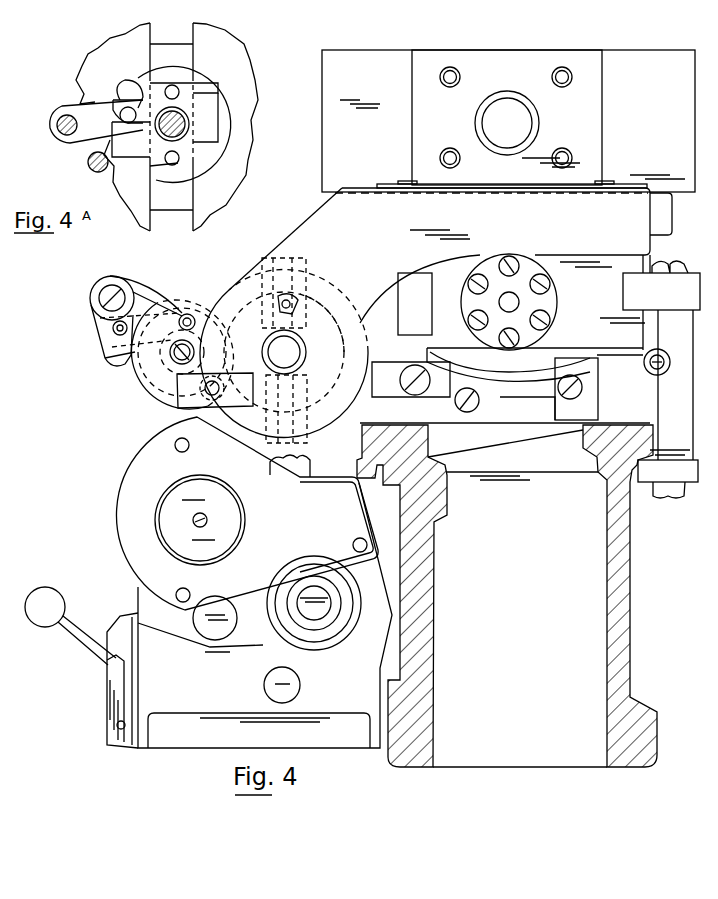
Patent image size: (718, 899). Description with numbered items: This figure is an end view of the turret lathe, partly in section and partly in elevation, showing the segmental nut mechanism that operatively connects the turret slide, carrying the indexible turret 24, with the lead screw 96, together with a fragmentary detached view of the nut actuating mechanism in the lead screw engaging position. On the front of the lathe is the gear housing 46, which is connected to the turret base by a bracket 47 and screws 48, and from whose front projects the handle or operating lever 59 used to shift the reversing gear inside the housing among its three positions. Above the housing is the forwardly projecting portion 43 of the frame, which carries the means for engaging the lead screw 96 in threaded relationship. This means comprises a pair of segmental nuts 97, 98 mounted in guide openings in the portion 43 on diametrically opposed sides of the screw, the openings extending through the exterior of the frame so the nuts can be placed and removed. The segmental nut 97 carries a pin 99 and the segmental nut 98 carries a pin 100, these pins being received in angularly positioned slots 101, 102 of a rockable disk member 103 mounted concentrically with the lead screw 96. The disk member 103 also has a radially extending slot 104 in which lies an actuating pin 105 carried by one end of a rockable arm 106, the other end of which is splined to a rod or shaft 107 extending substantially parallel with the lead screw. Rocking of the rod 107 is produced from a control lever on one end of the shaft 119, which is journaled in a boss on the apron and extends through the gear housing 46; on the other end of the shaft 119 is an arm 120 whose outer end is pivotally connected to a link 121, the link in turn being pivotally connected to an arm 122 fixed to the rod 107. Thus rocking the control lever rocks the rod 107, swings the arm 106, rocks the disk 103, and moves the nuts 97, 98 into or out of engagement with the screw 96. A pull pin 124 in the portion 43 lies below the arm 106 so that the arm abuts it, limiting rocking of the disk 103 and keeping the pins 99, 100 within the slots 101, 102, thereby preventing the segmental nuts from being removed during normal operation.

In FIG. 4, the indexible turret 24 is at (636, 60).
In FIG. 4, the forwardly projecting portion of frame 43 is at (330, 220).
In FIG. 4, the gear housing 46 is at (145, 527).
In FIG. 4, the bracket 47 is at (578, 360).
In FIG. 4, the screws 48 is at (462, 412).
In FIG. 4, the handle or operating lever 59 is at (100, 663).
In FIG. 4A, the lead screw 96 is at (190, 124).
In FIG. 4, the lead screw 96 is at (300, 352).
In FIG. 4A, the segmental nut 97 is at (172, 50).
In FIG. 4, the segmental nut 97 is at (306, 280).
In FIG. 4A, the segmental nut 98 is at (172, 200).
In FIG. 4, the segmental nut 98 is at (304, 405).
In FIG. 4A, the pin 99 is at (165, 92).
In FIG. 4A, the pin 100 is at (180, 157).
In FIG. 4A, the angularly positioned slot 101 is at (195, 90).
In FIG. 4A, the angularly positioned slot 102 is at (155, 162).
In FIG. 4A, the rockable disk member 103 is at (212, 158).
In FIG. 4, the rockable disk member 103 is at (352, 318).
In FIG. 4A, the radially extending slot 104 is at (120, 106).
In FIG. 4, the radially extending slot 104 is at (278, 312).
In FIG. 4A, the actuating pin 105 is at (132, 96).
In FIG. 4, the actuating pin 105 is at (215, 390).
In FIG. 4A, the rockable arm 106 is at (80, 107).
In FIG. 4, the rockable arm 106 is at (206, 338).
In FIG. 4A, the rod or shaft 107 is at (62, 133).
In FIG. 4, the rod or shaft 107 is at (148, 380).
In FIG. 4, the shaft 119 is at (88, 302).
In FIG. 4, the arm 120 is at (112, 328).
In FIG. 4, the link 121 is at (150, 296).
In FIG. 4, the arm 122 is at (128, 355).
In FIG. 4A, the pull pin 124 is at (90, 165).